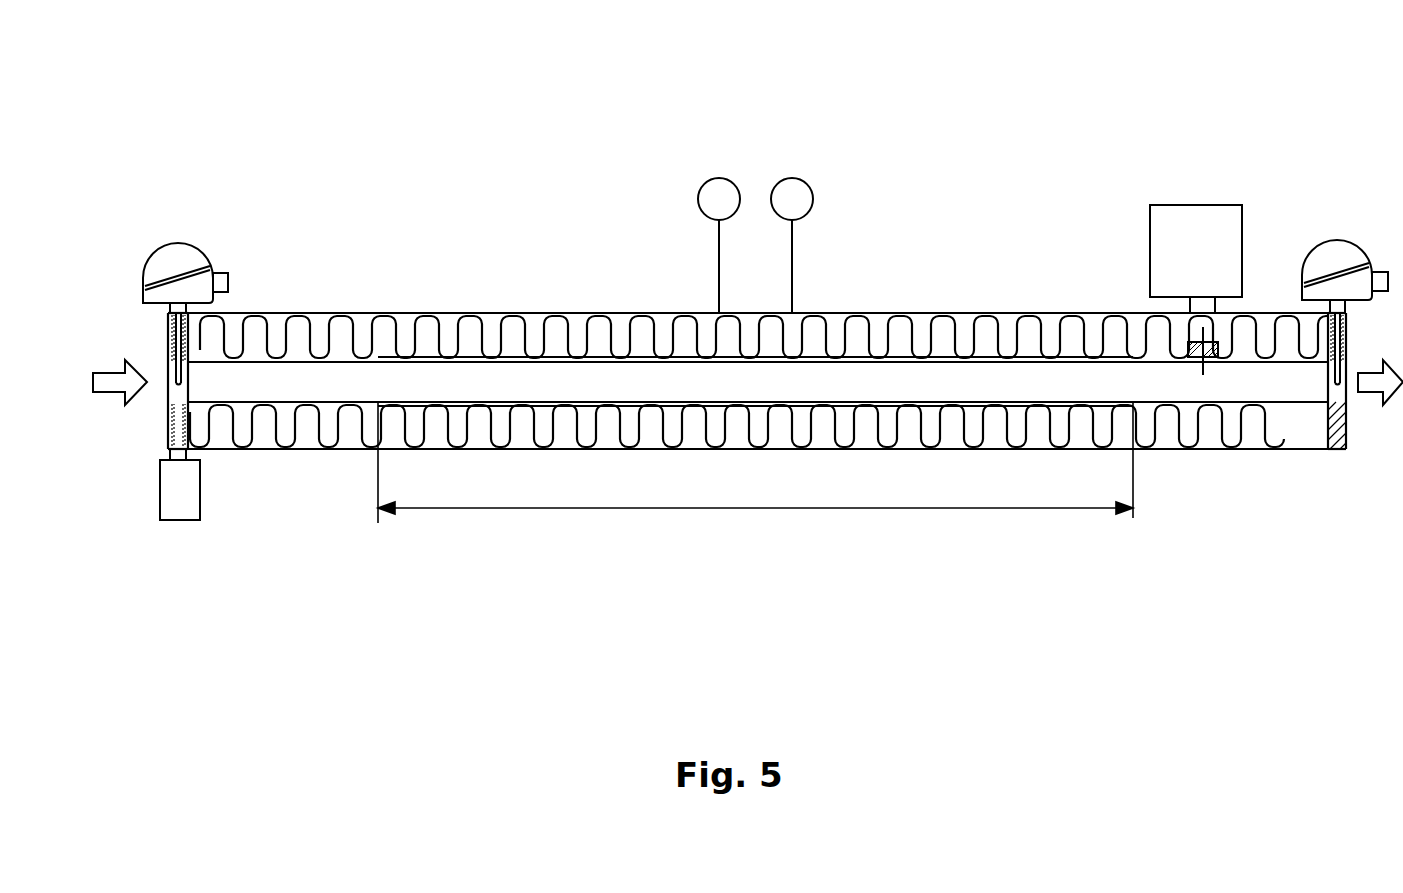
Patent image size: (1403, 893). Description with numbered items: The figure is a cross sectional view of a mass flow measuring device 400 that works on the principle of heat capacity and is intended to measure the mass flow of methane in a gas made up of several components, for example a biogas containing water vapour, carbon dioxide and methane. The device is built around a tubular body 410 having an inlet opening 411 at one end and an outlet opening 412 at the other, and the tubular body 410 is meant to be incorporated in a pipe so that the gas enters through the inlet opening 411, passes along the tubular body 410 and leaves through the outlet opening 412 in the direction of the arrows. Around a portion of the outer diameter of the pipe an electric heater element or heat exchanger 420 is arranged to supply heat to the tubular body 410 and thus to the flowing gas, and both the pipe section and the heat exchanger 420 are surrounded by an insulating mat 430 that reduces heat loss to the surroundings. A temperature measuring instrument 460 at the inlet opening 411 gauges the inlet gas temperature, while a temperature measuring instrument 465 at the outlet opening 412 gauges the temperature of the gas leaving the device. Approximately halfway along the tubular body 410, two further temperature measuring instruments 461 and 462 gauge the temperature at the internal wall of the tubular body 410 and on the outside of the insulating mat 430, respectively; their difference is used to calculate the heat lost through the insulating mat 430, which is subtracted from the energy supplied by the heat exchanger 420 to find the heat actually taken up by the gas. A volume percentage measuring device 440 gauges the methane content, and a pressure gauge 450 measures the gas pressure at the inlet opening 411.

The mass flow measuring device 400 is at (489, 166).
The tubular body 410 is at (307, 407).
The inlet opening 411 is at (172, 392).
The outlet opening 412 is at (1346, 397).
The heat exchanger 420 is at (468, 445).
The insulating mat 430 is at (547, 435).
The volume percentage measuring device 440 is at (1150, 224).
The pressure gauge 450 is at (178, 510).
The temperature measuring instrument 460 is at (167, 256).
The temperature measuring instrument 461 is at (698, 202).
The temperature measuring instrument 462 is at (812, 192).
The temperature measuring instrument 465 is at (1347, 254).